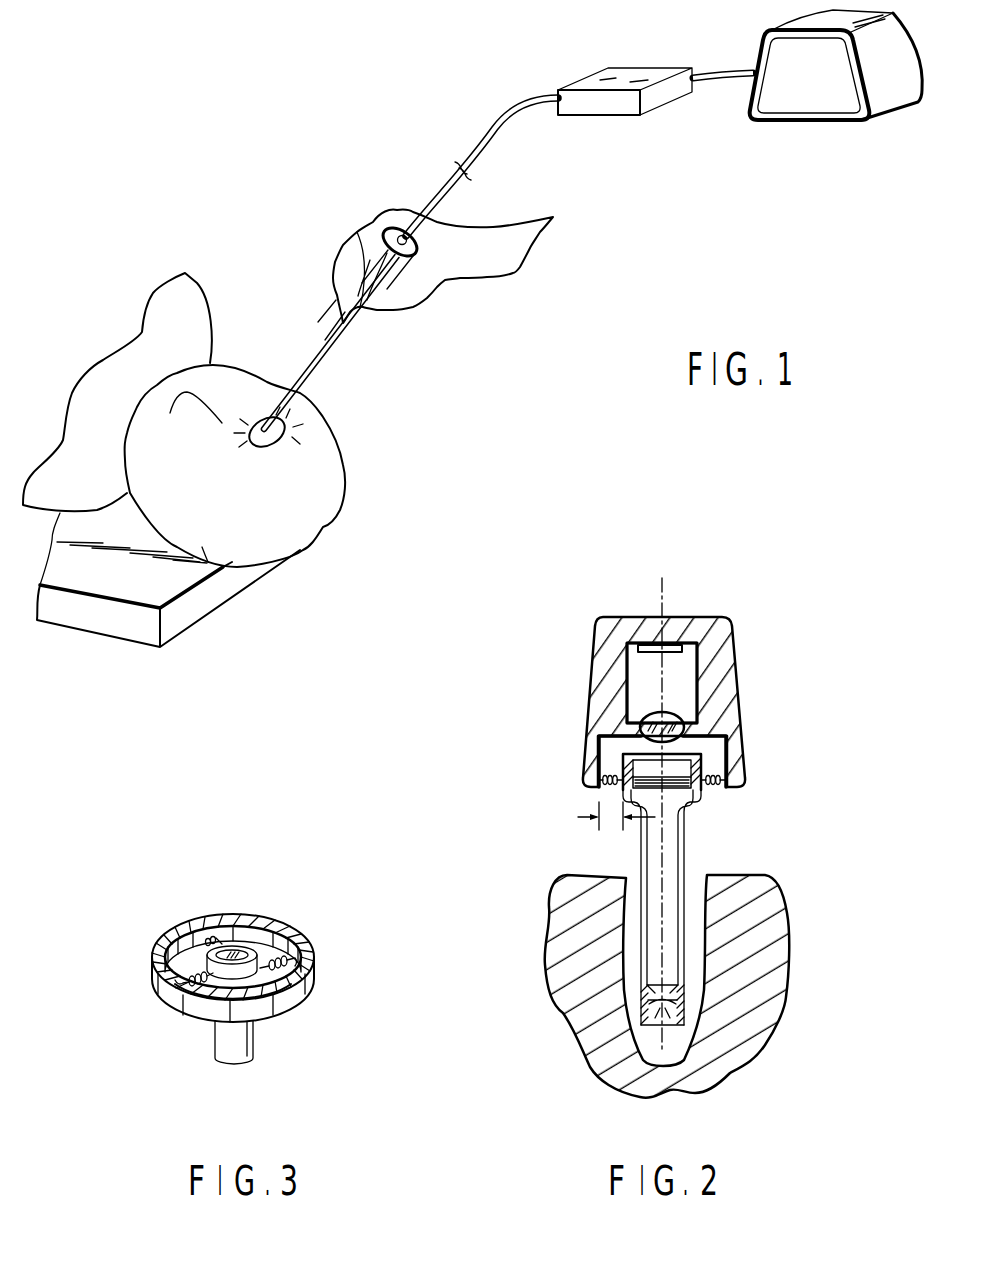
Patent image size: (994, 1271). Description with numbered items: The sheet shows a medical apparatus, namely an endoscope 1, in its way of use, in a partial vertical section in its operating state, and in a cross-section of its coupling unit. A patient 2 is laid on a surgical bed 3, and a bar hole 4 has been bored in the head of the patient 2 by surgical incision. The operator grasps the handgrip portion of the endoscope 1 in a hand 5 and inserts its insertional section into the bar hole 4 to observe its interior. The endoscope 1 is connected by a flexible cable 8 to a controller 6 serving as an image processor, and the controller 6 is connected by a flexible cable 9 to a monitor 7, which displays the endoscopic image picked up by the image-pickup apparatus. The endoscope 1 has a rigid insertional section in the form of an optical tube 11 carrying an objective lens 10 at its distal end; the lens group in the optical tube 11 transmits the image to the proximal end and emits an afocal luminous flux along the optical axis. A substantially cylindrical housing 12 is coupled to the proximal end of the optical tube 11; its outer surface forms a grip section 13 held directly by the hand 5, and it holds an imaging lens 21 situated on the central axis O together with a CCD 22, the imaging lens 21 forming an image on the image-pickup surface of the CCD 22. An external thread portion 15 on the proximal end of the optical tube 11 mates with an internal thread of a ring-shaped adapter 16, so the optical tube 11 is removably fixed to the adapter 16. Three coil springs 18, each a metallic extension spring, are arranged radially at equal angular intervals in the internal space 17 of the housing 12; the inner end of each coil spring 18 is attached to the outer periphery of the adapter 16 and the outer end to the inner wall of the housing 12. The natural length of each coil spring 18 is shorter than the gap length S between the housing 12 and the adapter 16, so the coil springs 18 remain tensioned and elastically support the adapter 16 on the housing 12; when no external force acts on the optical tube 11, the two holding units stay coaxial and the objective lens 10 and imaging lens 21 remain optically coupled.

In FIG. 1, the endoscope 1 is at (302, 334).
In FIG. 2, the endoscope 1 is at (838, 717).
In FIG. 1, the patient 2 is at (323, 518).
In FIG. 1, the surgical bed 3 is at (217, 570).
In FIG. 1, the bar hole 4 is at (279, 442).
In FIG. 2, the bar hole 4 is at (713, 859).
In FIG. 1, the hand 5 is at (488, 270).
In FIG. 1, the controller 6 is at (612, 116).
In FIG. 1, the monitor 7 is at (817, 105).
In FIG. 1, the flexible cable 8 is at (490, 138).
In FIG. 1, the flexible cable 9 is at (726, 72).
In FIG. 2, the objective lens 10 is at (688, 1013).
In FIG. 1, the optical tube 11 is at (323, 362).
In FIG. 2, the optical tube 11 is at (690, 931).
In FIG. 3, the optical tube 11 is at (243, 1052).
In FIG. 1, the housing 12 is at (377, 230).
In FIG. 2, the housing 12 is at (713, 617).
In FIG. 2, the grip section 13 is at (590, 731).
In FIG. 3, the grip section 13 is at (309, 988).
In FIG. 2, the external thread portion 15 is at (703, 788).
In FIG. 2, the adapter 16 is at (698, 750).
In FIG. 3, the adapter 16 is at (250, 950).
In FIG. 2, the internal space 17 is at (610, 757).
In FIG. 2, the coil spring 18 is at (712, 772).
In FIG. 3, the coil spring 18 is at (217, 935).
In FIG. 2, the imaging lens 21 is at (672, 713).
In FIG. 2, the CCD 22 is at (643, 657).
In FIG. 2, the central axis O is at (655, 598).
In FIG. 2, the gap length S is at (606, 810).